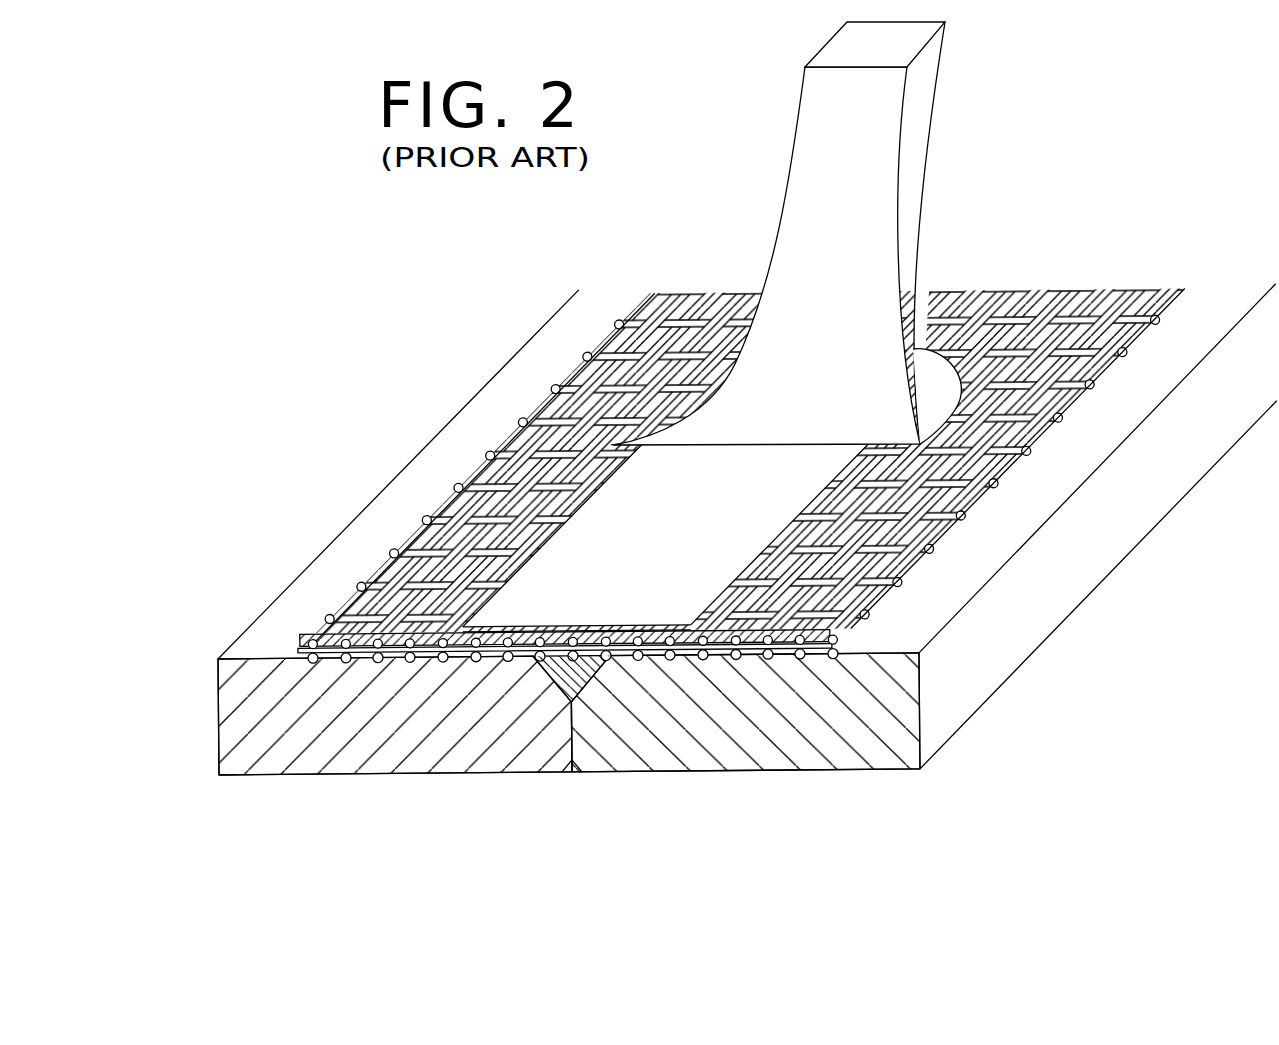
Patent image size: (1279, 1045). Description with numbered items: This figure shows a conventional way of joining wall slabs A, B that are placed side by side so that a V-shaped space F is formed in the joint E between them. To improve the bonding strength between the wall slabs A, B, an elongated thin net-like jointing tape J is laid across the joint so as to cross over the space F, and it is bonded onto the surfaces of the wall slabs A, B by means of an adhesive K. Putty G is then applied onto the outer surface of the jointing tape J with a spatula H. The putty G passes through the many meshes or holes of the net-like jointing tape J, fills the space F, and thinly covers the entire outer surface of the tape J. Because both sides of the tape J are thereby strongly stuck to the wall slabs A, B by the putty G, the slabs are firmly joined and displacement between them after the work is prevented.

The wall slab A is at (252, 645).
The wall slab B is at (890, 745).
The joint E is at (571, 770).
The V-shaped space F is at (600, 665).
The putty G is at (577, 675).
The spatula H is at (869, 220).
The net-like jointing tape J is at (963, 517).
The adhesive K is at (360, 660).